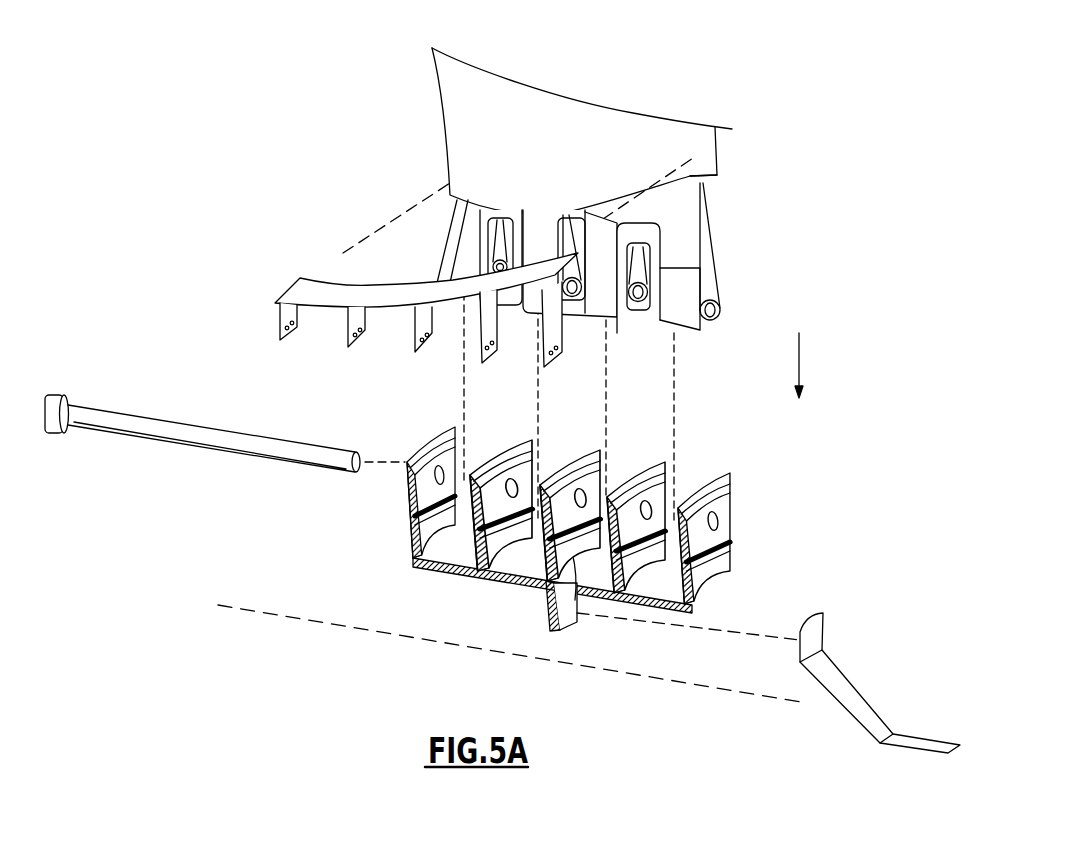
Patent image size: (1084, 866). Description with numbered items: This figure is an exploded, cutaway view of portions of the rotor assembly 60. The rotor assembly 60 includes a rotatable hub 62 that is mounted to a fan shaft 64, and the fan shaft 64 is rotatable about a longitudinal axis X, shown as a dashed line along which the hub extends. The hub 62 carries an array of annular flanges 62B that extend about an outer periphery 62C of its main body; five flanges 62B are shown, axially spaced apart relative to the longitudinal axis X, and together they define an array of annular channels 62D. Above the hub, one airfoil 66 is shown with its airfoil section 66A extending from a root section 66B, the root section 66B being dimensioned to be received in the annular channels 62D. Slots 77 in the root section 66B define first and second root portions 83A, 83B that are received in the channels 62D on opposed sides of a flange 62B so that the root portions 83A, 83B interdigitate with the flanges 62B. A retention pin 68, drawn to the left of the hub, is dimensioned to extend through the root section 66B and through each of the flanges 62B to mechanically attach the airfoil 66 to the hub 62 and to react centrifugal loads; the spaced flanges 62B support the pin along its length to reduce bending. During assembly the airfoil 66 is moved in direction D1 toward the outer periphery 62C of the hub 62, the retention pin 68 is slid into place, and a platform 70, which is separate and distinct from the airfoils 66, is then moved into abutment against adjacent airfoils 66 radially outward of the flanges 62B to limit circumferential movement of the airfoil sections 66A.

The rotor assembly 60 is at (212, 76).
The airfoil 66 is at (697, 97).
The airfoil section 66A is at (717, 173).
The root section 66B is at (717, 257).
The slot 77 is at (497, 253).
The platform 70 is at (290, 292).
The first root portion 83A is at (613, 330).
The second root portion 83B is at (695, 335).
The direction D1 is at (800, 355).
The retention pin 68 is at (130, 437).
The rotatable hub 62 is at (403, 543).
The annular flange 62B is at (667, 467).
The outer periphery 62C is at (443, 563).
The annular channel 62D is at (500, 545).
The longitudinal axis X is at (278, 612).
The fan shaft 64 is at (850, 680).